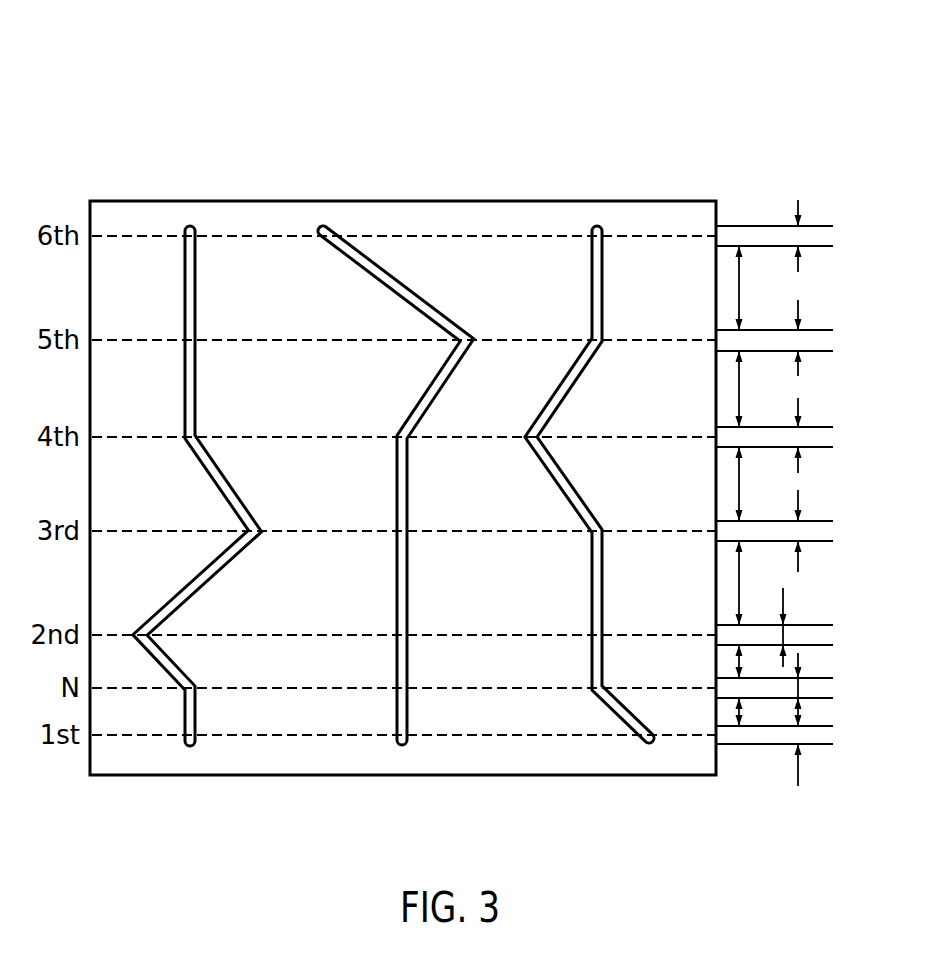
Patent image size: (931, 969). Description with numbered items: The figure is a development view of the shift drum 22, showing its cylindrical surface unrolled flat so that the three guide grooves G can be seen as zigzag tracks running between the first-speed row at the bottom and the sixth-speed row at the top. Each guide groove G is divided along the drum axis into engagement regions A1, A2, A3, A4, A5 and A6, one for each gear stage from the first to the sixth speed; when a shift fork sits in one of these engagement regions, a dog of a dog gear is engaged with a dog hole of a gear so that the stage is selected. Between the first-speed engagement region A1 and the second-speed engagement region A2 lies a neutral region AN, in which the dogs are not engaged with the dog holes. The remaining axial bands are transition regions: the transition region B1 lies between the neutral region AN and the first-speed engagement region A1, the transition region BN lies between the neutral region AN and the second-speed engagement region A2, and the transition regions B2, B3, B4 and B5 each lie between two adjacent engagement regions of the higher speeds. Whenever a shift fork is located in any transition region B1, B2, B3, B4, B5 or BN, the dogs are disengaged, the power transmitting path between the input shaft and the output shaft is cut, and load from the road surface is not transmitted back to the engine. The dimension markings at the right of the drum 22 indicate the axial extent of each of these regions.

The shift drum 22 is at (717, 200).
The guide grooves G is at (597, 227).
The engagement region A6 is at (813, 214).
The engagement region A5 is at (813, 290).
The engagement region A4 is at (813, 389).
The engagement region A3 is at (813, 484).
The engagement region A2 is at (799, 604).
The neutral region AN is at (815, 686).
The engagement region A1 is at (813, 767).
The transition region B5 is at (754, 288).
The transition region B4 is at (754, 389).
The transition region B3 is at (754, 484).
The transition region B2 is at (754, 583).
The transition region BN is at (755, 662).
The transition region B1 is at (754, 714).